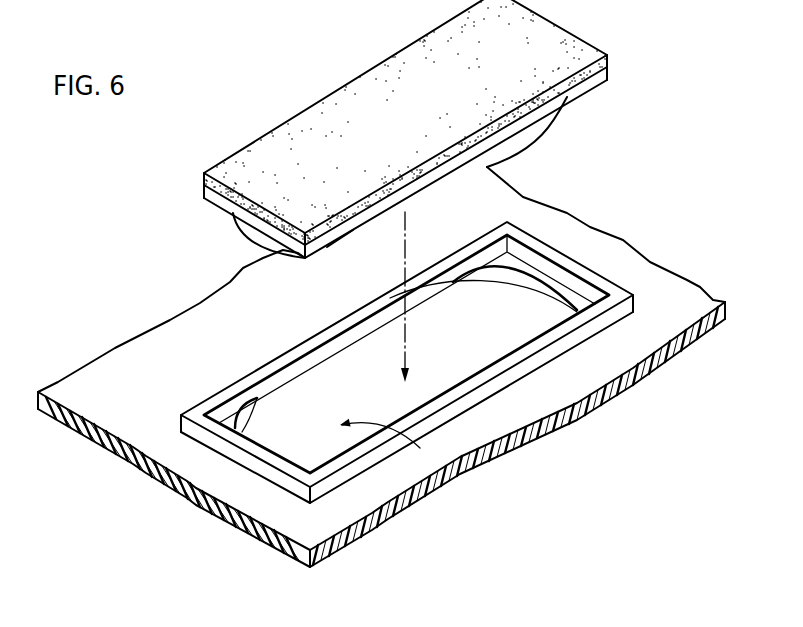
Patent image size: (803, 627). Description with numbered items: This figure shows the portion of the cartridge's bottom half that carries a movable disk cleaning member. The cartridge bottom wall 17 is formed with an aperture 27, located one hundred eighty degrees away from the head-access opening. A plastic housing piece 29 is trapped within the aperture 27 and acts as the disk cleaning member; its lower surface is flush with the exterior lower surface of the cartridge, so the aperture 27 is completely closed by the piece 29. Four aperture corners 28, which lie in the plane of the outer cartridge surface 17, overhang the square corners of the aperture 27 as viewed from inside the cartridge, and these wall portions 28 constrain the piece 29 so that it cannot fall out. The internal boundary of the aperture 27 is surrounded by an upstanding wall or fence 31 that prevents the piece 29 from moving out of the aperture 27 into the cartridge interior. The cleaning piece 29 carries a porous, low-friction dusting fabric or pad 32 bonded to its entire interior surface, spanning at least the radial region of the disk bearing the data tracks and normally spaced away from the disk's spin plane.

The cartridge bottom wall 17 is at (163, 340).
The aperture 27 is at (407, 338).
The aperture corners 28 is at (507, 260).
The plastic housing piece 29 is at (532, 128).
The upstanding wall or fence 31 is at (572, 267).
The dusting fabric or pad 32 is at (332, 127).